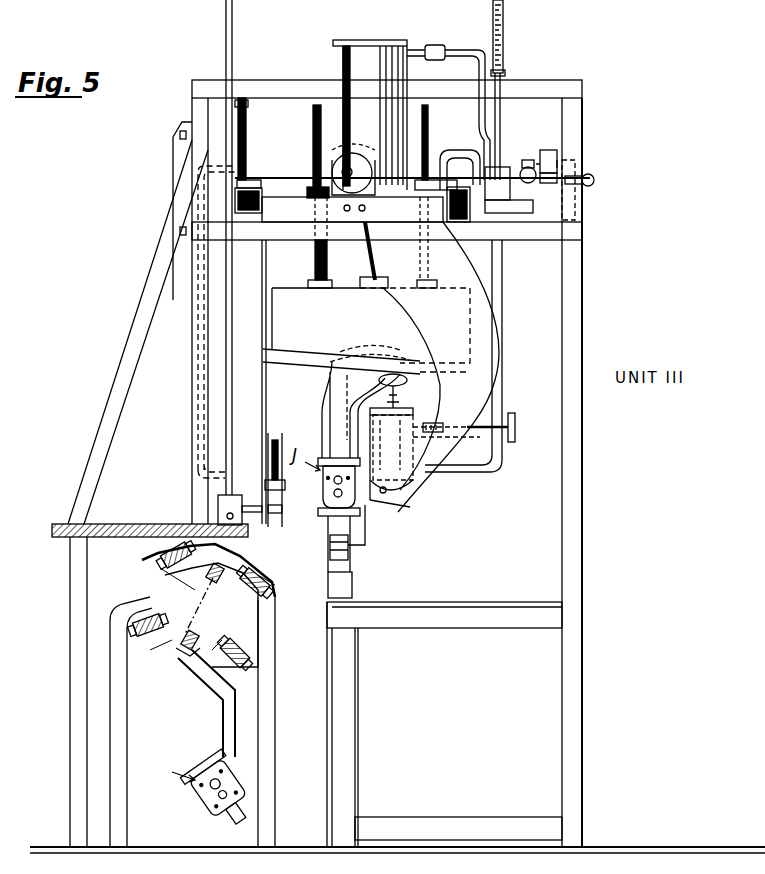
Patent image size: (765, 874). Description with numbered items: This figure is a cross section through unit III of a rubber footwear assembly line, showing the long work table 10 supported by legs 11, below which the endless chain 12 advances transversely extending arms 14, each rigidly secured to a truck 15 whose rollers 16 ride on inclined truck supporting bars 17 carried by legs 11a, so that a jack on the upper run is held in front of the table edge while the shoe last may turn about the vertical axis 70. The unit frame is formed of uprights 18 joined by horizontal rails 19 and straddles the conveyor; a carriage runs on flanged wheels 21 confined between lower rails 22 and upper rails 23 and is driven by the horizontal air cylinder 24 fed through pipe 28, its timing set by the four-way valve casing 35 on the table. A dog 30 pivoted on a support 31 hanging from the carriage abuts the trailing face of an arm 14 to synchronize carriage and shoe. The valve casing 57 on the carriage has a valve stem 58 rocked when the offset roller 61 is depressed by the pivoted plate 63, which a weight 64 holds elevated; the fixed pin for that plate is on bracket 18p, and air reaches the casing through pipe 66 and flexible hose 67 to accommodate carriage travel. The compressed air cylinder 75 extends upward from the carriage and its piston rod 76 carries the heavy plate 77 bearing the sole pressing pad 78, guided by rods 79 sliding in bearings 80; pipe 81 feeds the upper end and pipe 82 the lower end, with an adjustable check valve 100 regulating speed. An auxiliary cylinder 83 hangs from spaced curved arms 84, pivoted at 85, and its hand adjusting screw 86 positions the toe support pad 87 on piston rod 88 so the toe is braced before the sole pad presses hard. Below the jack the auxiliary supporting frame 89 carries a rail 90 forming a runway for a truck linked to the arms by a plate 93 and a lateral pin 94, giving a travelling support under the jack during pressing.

The table 10 is at (126, 524).
The legs 11 is at (70, 705).
The legs 11a is at (127, 808).
The chain 12 is at (215, 585).
The arm 14 is at (287, 567).
The truck 15 is at (185, 660).
The rollers 16 is at (262, 625).
The truck supporting bars 17 is at (148, 558).
The uprights 18 is at (197, 352).
The bracket 18p is at (578, 208).
The horizontal rails 19 is at (545, 87).
The flanged wheels 21 is at (237, 208).
The lower rails 22 is at (252, 222).
The upper rails 23 is at (252, 185).
The air cylinder 24 is at (352, 158).
The pipe 28 is at (298, 176).
The dog 30 is at (283, 522).
The support 31 is at (268, 385).
The four-way valve casing 35 is at (218, 508).
The valve casing 57 is at (507, 150).
The valve stem 58 is at (527, 162).
The offset roller 61 is at (560, 155).
The plate 63 is at (548, 150).
The weight 64 is at (592, 176).
The pipe 66 is at (500, 75).
The flexible hose 67 is at (503, 12).
The vertical axis 70 is at (208, 806).
The compressed air cylinder 75 is at (343, 58).
The piston rod 76 is at (370, 272).
The plate 77 is at (296, 288).
The sole pressing pad 78 is at (272, 332).
The rods 79 is at (313, 118).
The bearings 80 is at (307, 192).
The pipe 81 is at (470, 48).
The pipe 82 is at (428, 150).
The auxiliary cylinder 83 is at (418, 440).
The curved arms 84 is at (406, 312).
The pivot 85 is at (412, 492).
The hand adjusting screw 86 is at (512, 420).
The toe support pad 87 is at (420, 358).
The piston rod 88 is at (400, 396).
The auxiliary supporting frame 89 is at (460, 628).
The rail 90 is at (352, 585).
The plate 93 is at (372, 520).
The pin 94 is at (362, 547).
The adjustable check valve 100 is at (437, 44).